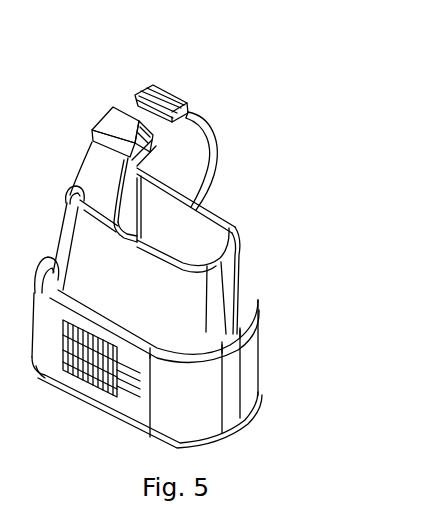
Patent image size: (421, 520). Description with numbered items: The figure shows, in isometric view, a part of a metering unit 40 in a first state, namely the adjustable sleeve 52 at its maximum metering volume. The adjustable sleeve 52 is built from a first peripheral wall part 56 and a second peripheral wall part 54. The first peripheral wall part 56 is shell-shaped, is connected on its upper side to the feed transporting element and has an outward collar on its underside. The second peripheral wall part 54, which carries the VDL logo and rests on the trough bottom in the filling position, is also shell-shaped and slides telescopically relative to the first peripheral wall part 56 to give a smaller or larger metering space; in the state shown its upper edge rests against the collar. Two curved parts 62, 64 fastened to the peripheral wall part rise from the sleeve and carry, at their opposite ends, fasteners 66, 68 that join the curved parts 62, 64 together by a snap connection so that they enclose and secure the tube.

The metering unit 40 is at (268, 140).
The adjustable sleeve 52 is at (277, 283).
The second peripheral wall part 54 is at (247, 375).
The first peripheral wall part 56 is at (233, 257).
The curved part 62 is at (85, 155).
The curved part 64 is at (198, 133).
The fastener 66 is at (108, 93).
The fastener 68 is at (169, 81).